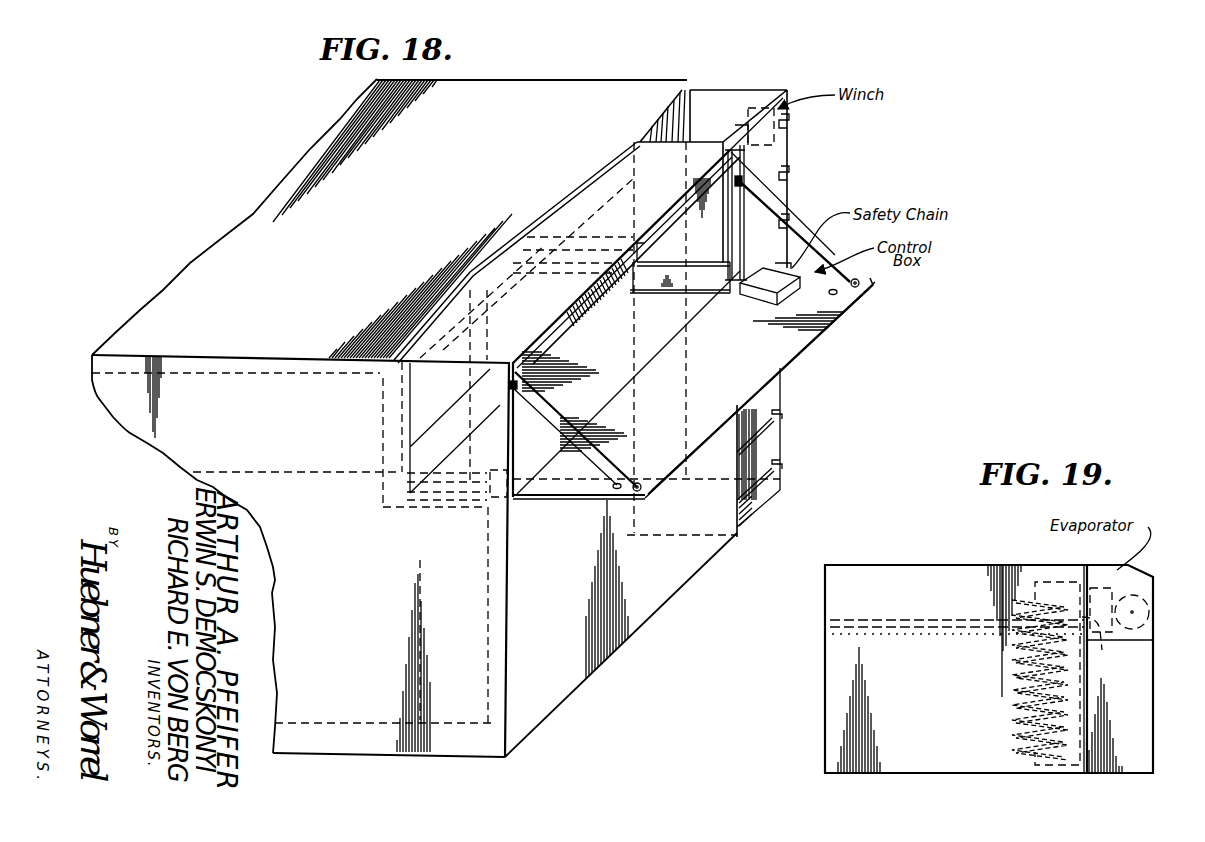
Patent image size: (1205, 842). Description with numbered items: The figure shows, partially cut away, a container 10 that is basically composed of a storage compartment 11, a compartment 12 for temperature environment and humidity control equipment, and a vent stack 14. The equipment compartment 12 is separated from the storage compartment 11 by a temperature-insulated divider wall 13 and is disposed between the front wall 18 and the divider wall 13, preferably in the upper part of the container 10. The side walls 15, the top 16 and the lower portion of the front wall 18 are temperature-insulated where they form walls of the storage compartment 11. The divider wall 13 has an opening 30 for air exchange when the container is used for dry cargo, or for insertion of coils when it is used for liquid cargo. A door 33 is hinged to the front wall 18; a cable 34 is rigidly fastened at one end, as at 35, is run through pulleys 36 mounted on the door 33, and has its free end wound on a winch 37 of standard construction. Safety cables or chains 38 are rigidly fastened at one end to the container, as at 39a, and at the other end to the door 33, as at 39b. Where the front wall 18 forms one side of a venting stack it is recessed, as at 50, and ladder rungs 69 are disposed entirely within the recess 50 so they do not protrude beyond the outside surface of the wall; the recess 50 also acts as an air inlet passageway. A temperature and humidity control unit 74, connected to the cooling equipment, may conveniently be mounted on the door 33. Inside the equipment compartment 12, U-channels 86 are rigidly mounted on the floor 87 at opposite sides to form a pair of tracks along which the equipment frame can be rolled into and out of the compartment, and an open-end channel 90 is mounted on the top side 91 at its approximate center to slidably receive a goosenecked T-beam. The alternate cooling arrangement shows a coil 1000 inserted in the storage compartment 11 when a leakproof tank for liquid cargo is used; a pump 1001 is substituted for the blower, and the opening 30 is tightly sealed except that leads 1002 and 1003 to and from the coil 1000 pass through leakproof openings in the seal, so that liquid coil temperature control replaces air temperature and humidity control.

In FIG. 18, the container 10 is at (578, 80).
In FIG. 18, the storage compartment 11 is at (242, 436).
In FIG. 18, the equipment compartment 12 is at (648, 348).
In FIG. 18, the divider wall 13 is at (545, 208).
In FIG. 18, the vent stack 14 is at (722, 110).
In FIG. 18, the side walls 15 is at (385, 629).
In FIG. 19, the side walls 15 is at (852, 677).
In FIG. 18, the top 16 is at (247, 222).
In FIG. 19, the top 16 is at (928, 563).
In FIG. 18, the front wall 18 is at (640, 582).
In FIG. 18, the opening 30 is at (412, 402).
In FIG. 19, the opening 30 is at (1085, 568).
In FIG. 18, the door 33 is at (770, 346).
In FIG. 18, the cable 34 is at (722, 412).
In FIG. 18, the cable fastening point 35 is at (514, 361).
In FIG. 18, the pulleys 36 is at (640, 483).
In FIG. 18, the winch 37 is at (788, 116).
In FIG. 18, the safety cables or chains 38 is at (545, 420).
In FIG. 18, the safety chain container fastening point 39a is at (505, 387).
In FIG. 18, the safety chain door fastening point 39b is at (614, 490).
In FIG. 18, the recess 50 is at (772, 439).
In FIG. 18, the ladder rungs 69 is at (783, 466).
In FIG. 18, the temperature and humidity control unit 74 is at (803, 268).
In FIG. 18, the U-channels 86 is at (720, 264).
In FIG. 18, the floor 87 is at (680, 320).
In FIG. 18, the open-end channel 90 is at (620, 300).
In FIG. 18, the top side 91 is at (683, 143).
In FIG. 19, the coil 1000 is at (1005, 687).
In FIG. 19, the pump 1001 is at (1140, 605).
In FIG. 19, the lead to coil 1002 is at (1055, 572).
In FIG. 19, the lead from coil 1003 is at (1100, 640).